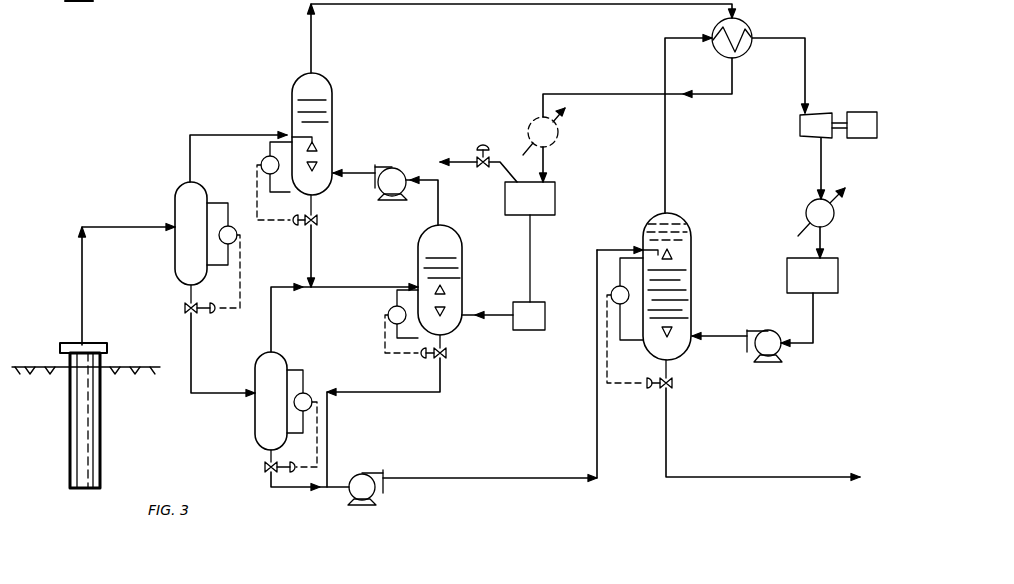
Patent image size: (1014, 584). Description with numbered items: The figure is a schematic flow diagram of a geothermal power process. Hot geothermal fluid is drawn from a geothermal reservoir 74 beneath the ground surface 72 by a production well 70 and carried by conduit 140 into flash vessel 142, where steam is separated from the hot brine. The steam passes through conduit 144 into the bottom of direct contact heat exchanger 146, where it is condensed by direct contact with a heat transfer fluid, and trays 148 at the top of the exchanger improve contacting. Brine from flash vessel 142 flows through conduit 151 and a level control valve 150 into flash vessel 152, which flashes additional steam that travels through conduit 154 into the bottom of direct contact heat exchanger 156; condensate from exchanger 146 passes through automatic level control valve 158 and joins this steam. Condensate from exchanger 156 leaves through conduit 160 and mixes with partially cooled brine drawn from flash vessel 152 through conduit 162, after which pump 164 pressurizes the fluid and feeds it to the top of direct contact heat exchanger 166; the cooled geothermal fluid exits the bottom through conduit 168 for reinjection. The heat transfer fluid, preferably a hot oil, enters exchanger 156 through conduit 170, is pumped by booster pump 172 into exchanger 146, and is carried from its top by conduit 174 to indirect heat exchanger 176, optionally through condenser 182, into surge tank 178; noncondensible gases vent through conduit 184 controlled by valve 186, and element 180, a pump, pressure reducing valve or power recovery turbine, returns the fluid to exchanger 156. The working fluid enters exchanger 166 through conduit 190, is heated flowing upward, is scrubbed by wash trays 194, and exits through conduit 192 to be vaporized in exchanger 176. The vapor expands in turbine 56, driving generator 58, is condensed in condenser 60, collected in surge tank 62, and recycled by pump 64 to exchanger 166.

The turbine 56 is at (818, 117).
The generator 58 is at (855, 117).
The condenser 60 is at (835, 216).
The surge tank 62 is at (838, 276).
The pump 64 is at (776, 352).
The production well 70 is at (95, 432).
The ground surface 72 is at (36, 362).
The geothermal reservoir 74 is at (46, 418).
The conduit 140 is at (105, 226).
The flash vessel 142 is at (196, 184).
The conduit 144 is at (259, 136).
The direct contact heat exchanger 146 is at (333, 124).
The trays 148 is at (322, 100).
The level control valve 150 is at (186, 313).
The conduit 151 is at (194, 352).
The flash vessel 152 is at (280, 355).
The conduit 154 is at (273, 305).
The direct contact heat exchanger 156 is at (463, 270).
The automatic level control valve 158 is at (320, 222).
The conduit 160 is at (373, 392).
The conduit 162 is at (279, 488).
The pump 164 is at (357, 478).
The direct contact heat exchanger 166 is at (691, 288).
The conduit 168 is at (768, 462).
The conduit 170 is at (474, 316).
The booster pump 172 is at (396, 175).
The conduit 174 is at (434, 4).
The indirect heat exchanger 176 is at (742, 52).
The surge tank 178 is at (547, 214).
The element 180 is at (540, 330).
The condenser 182 is at (532, 122).
The conduit 184 is at (500, 170).
The valve 186 is at (485, 142).
The conduit 190 is at (704, 340).
The conduit 192 is at (667, 160).
The wash trays 194 is at (688, 240).